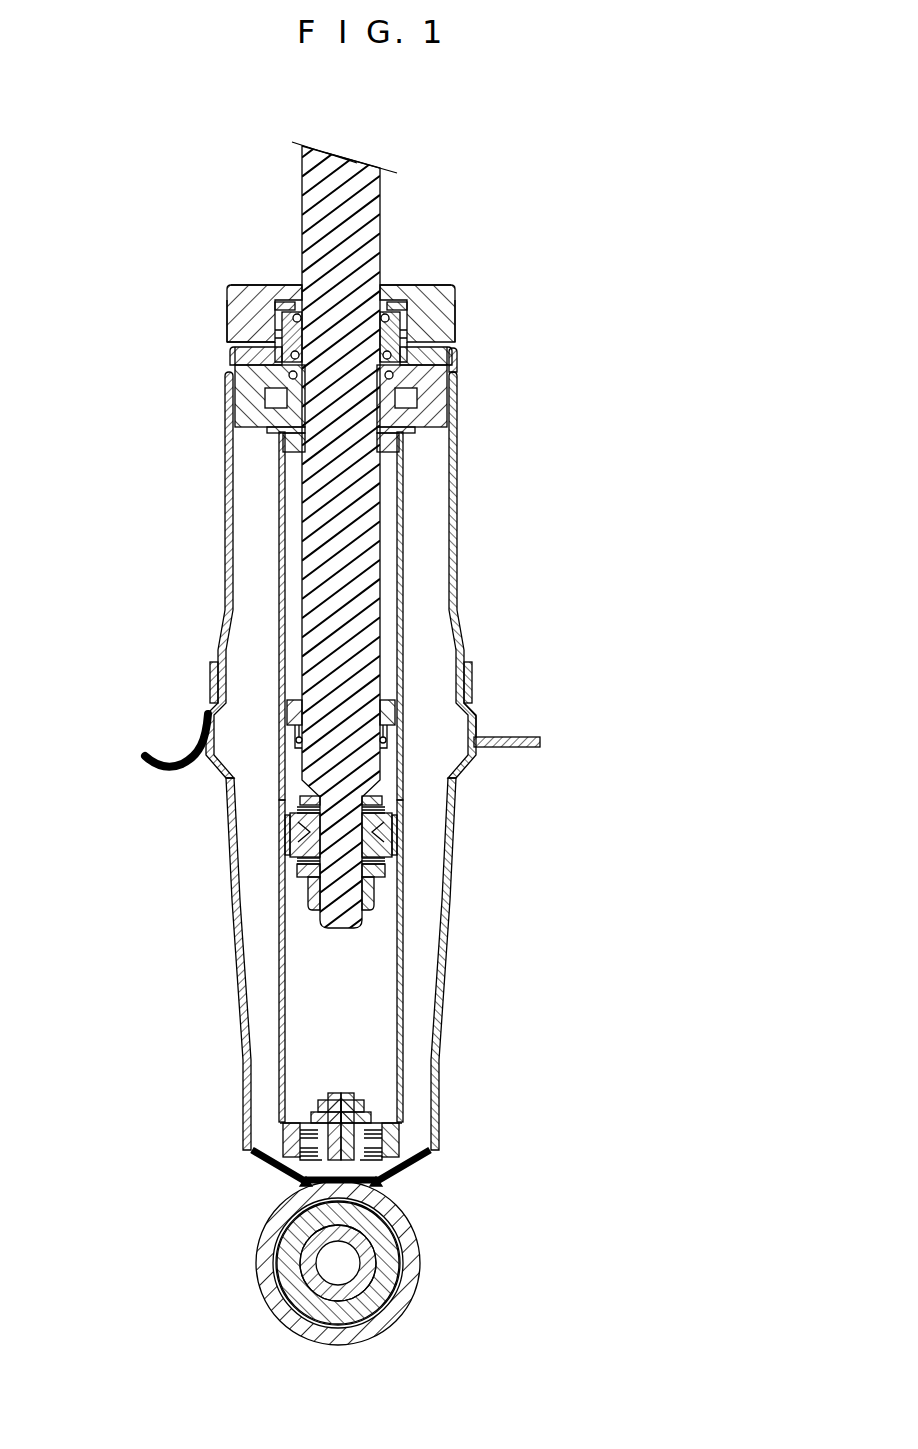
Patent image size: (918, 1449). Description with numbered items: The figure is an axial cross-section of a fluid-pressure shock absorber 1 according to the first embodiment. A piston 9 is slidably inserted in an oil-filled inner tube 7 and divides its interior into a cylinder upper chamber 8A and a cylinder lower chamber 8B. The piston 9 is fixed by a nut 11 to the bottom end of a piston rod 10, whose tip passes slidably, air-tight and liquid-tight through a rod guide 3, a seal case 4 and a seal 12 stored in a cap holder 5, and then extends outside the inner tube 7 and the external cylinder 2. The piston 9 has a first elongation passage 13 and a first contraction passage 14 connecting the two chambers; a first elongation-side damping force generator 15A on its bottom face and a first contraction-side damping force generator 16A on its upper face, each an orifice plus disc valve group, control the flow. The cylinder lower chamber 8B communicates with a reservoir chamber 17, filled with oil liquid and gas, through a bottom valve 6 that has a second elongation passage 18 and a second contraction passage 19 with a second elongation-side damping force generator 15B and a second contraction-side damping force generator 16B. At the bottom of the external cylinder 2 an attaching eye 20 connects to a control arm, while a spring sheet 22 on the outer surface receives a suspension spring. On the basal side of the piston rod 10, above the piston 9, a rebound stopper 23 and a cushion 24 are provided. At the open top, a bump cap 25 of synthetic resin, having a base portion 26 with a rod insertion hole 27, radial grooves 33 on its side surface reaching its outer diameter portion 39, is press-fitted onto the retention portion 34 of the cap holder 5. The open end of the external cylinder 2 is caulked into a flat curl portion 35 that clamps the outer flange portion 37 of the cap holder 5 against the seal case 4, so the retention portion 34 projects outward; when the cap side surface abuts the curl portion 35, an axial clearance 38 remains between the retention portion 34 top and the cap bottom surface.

The fluid-pressure shock absorber 1 is at (505, 187).
The external cylinder 2 is at (468, 502).
The rod guide 3 is at (428, 428).
The seal case 4 is at (436, 395).
The cap holder 5 is at (266, 327).
The bottom valve 6 is at (420, 1152).
The inner tube 7 is at (403, 997).
The cylinder upper chamber 8A is at (387, 603).
The cylinder lower chamber 8B is at (392, 930).
The piston 9 is at (378, 821).
The piston rod 10 is at (386, 568).
The nut 11 is at (378, 894).
The seal 12 is at (415, 333).
The first elongation passage 13 is at (290, 823).
The first contraction passage 14 is at (378, 829).
The first elongation-side damping force generator 15A is at (290, 857).
The second elongation-side damping force generator 15B is at (377, 1120).
The first contraction-side damping force generator 16A is at (290, 806).
The second contraction-side damping force generator 16B is at (365, 1153).
The reservoir chamber 17 is at (430, 652).
The second elongation passage 18 is at (285, 1140).
The second contraction passage 19 is at (398, 1126).
The attaching eye 20 is at (419, 1262).
The spring sheet 22 is at (509, 737).
The rebound stopper 23 is at (293, 729).
The cushion 24 is at (283, 705).
The bump cap 25 is at (238, 278).
The base portion 26 is at (283, 296).
The rod insertion hole 27 is at (386, 300).
The grooves 33 is at (458, 346).
The retention portion 34 is at (423, 325).
The curl portion 35 is at (230, 349).
The outer flange portion 37 is at (452, 358).
The clearance 38 is at (227, 300).
The outer diameter portion 39 is at (227, 317).